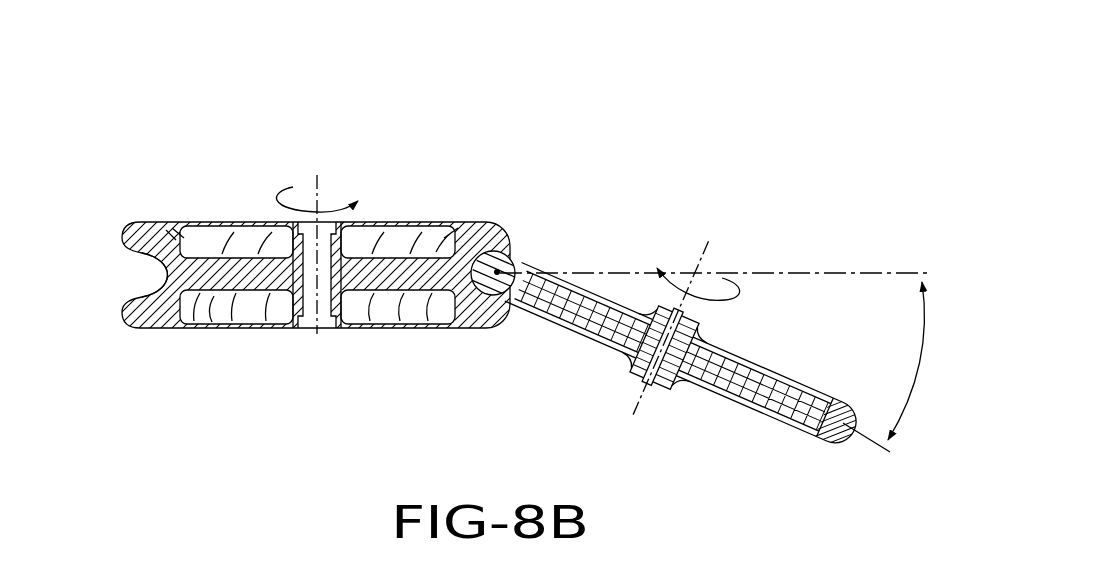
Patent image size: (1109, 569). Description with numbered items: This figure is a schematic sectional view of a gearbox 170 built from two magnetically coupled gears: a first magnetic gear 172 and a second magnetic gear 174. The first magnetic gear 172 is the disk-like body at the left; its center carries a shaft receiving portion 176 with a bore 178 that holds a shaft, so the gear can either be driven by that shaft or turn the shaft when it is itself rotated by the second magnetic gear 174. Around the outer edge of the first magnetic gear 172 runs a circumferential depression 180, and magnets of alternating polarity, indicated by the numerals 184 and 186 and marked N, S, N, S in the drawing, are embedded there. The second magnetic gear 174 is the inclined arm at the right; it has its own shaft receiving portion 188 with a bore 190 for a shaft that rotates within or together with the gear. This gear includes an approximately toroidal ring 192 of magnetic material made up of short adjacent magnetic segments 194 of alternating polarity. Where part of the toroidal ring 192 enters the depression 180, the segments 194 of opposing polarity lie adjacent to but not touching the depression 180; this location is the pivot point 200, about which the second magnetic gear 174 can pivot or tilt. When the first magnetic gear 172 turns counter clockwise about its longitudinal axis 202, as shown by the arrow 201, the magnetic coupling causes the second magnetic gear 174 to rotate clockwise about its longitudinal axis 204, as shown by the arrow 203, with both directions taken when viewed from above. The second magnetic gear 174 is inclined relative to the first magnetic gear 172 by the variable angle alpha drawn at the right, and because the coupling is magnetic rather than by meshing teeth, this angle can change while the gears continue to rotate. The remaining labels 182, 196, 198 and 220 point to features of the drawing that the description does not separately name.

The gearbox 170 is at (192, 110).
The first magnetic gear 172 is at (178, 400).
The second magnetic gear 174 is at (703, 421).
The shaft receiving portion 176 is at (270, 311).
The bore 178 is at (332, 318).
The circumferential depression 180 is at (147, 268).
The upper magnet pocket 182 is at (130, 218).
The magnet 184 is at (447, 296).
The magnet 186 is at (160, 297).
The shaft receiving portion 188 is at (655, 406).
The bore 190 is at (652, 380).
The toroidal ring 192 is at (522, 268).
The magnetic segments 194 is at (838, 403).
The horizontal axis 196 is at (516, 262).
The arm end cap 198 is at (840, 447).
The pivot point 200 is at (506, 290).
The arrow 201 is at (276, 197).
The longitudinal axis 202 is at (319, 190).
The arrow 203 is at (733, 285).
The longitudinal axis 204 is at (698, 284).
The magnet ring 220 is at (415, 223).